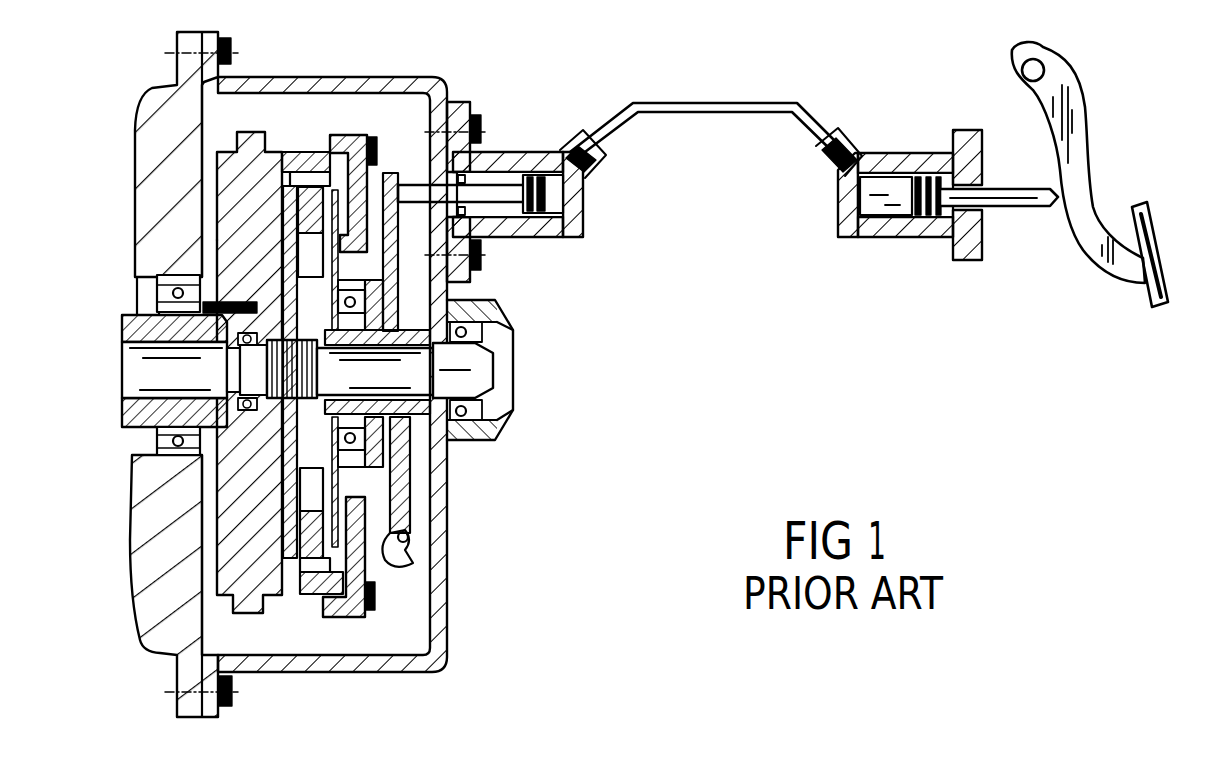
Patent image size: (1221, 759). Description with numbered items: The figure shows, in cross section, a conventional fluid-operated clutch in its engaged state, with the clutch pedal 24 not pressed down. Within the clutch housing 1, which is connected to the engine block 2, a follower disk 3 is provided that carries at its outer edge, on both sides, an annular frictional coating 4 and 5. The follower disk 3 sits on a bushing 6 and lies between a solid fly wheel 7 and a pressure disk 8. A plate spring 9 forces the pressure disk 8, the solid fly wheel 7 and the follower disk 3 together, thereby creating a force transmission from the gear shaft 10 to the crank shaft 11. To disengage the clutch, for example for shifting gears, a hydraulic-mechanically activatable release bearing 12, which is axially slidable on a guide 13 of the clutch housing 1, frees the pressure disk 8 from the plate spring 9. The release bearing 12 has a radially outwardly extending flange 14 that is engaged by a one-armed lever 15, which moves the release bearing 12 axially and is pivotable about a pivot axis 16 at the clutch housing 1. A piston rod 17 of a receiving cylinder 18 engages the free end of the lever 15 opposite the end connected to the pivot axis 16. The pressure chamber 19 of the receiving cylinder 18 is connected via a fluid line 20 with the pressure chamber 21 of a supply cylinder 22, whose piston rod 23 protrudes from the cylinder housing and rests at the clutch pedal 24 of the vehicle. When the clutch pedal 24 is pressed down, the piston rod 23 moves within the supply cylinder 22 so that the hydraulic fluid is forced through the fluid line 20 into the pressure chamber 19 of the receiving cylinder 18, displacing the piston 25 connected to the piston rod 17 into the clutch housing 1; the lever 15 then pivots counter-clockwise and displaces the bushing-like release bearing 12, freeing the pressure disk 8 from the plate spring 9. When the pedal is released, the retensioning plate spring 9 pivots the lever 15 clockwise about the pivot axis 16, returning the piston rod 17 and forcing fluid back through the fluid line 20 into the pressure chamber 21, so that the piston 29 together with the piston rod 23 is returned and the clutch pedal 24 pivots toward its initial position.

The clutch housing 1 is at (363, 662).
The engine block 2 is at (192, 78).
The follower disk 3 is at (240, 253).
The annular frictional coating 4 is at (282, 152).
The annular frictional coating 5 is at (303, 180).
The bushing 6 is at (125, 343).
The solid fly wheel 7 is at (240, 192).
The pressure disk 8 is at (330, 135).
The plate spring 9 is at (340, 497).
The gear shaft 10 is at (490, 412).
The crank shaft 11 is at (133, 328).
The release bearing 12 is at (393, 417).
The guide 13 is at (457, 350).
The flange 14 is at (447, 302).
The one-armed lever 15 is at (398, 255).
The pivot axis 16 is at (410, 543).
The piston rod 17 is at (552, 238).
The receiving cylinder 18 is at (517, 148).
The pressure chamber 19 is at (553, 187).
The fluid line 20 is at (692, 104).
The pressure chamber 21 is at (882, 180).
The supply cylinder 22 is at (860, 240).
The piston rod 23 is at (1022, 210).
The clutch pedal 24 is at (1070, 135).
The piston 25 is at (543, 207).
The piston 29 is at (932, 220).